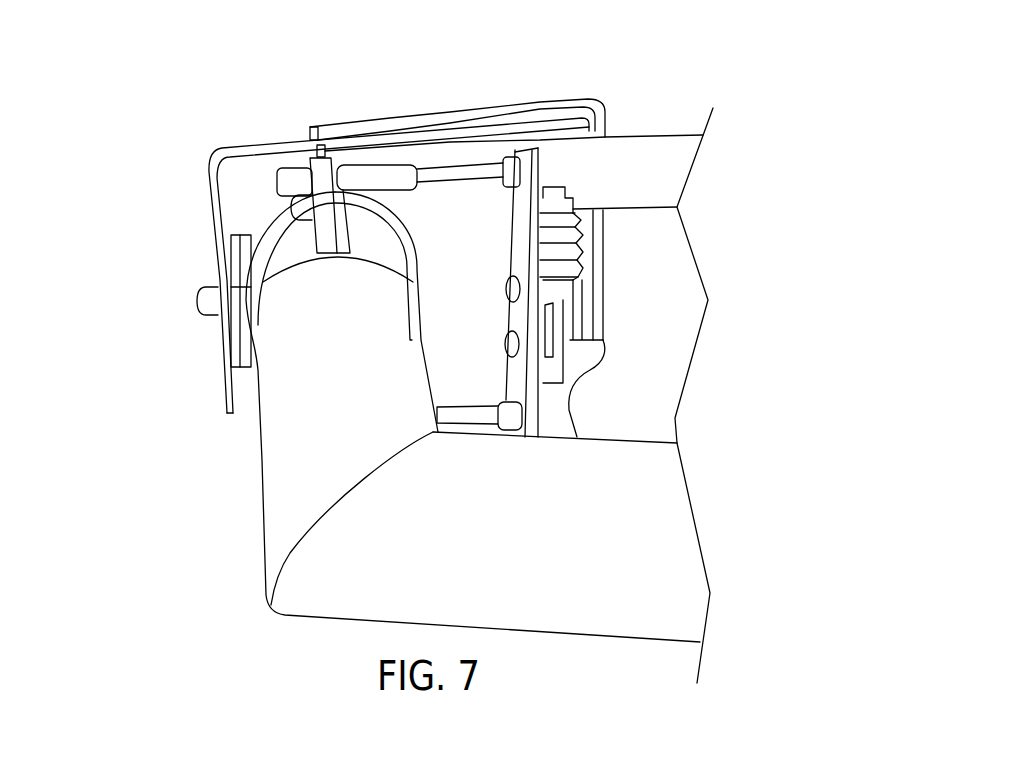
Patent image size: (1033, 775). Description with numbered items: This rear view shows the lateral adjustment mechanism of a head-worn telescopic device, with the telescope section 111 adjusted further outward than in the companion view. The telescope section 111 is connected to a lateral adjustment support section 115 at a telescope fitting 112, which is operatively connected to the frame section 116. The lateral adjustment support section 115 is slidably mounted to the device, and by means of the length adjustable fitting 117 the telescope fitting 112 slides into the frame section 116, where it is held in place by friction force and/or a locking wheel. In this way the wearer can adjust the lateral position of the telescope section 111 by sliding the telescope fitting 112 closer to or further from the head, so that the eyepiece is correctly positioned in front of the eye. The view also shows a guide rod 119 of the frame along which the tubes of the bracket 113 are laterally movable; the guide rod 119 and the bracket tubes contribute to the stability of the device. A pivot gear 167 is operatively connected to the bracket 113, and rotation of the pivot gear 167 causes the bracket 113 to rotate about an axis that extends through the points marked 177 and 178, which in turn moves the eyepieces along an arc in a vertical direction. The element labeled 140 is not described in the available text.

The telescope section 111 is at (282, 495).
The telescope fitting 112 is at (205, 195).
The bracket 113 is at (277, 233).
The lateral adjustment support section 115 is at (556, 42).
The frame section 116 is at (423, 110).
The length adjustable fitting 117 is at (263, 143).
The guide rod 119 is at (442, 172).
The support member 140 is at (650, 147).
The pivot gear 167 is at (578, 272).
The pivot axis reference point 177 is at (195, 295).
The pivot axis reference point 178 is at (503, 288).